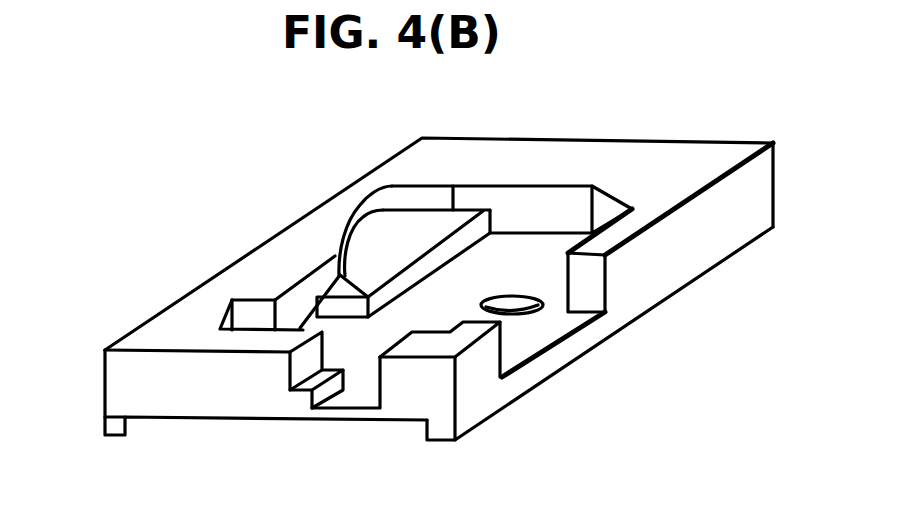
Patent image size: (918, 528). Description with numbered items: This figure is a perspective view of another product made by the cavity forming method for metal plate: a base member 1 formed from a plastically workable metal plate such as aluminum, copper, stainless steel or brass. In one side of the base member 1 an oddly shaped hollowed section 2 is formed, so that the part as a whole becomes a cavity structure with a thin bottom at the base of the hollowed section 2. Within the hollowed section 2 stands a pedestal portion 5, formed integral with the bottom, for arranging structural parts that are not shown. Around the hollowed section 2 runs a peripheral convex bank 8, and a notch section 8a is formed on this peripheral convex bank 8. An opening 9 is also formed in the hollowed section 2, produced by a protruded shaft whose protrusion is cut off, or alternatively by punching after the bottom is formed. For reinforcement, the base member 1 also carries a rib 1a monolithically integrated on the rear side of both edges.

The base member 1 is at (782, 183).
The rib 1a is at (115, 427).
The hollowed section 2 is at (530, 243).
The pedestal portion 5 is at (438, 218).
The peripheral convex bank 8 is at (620, 237).
The notch section 8a is at (355, 400).
The opening 9 is at (543, 303).